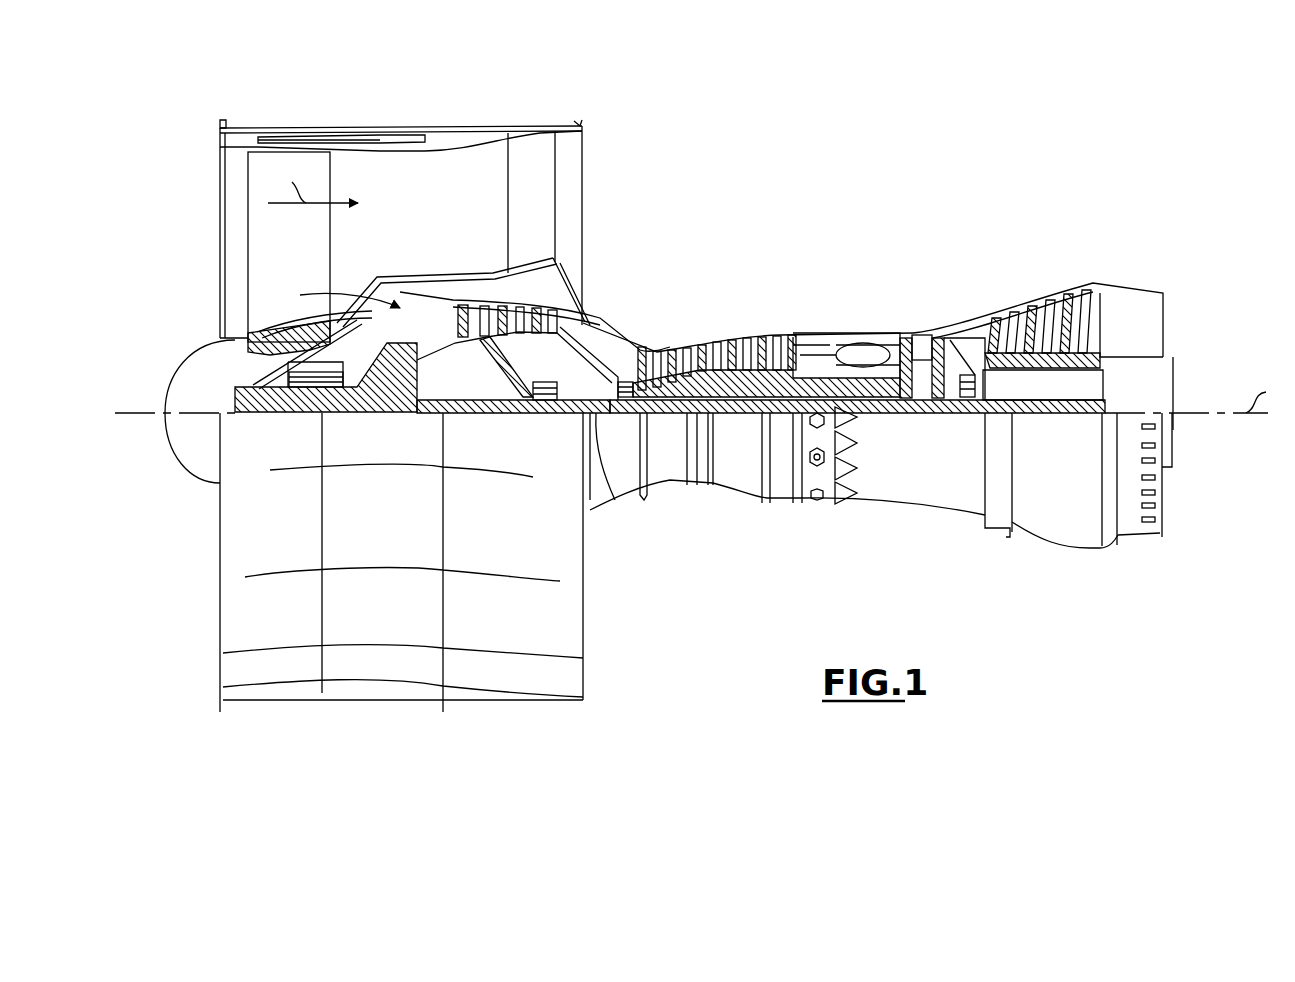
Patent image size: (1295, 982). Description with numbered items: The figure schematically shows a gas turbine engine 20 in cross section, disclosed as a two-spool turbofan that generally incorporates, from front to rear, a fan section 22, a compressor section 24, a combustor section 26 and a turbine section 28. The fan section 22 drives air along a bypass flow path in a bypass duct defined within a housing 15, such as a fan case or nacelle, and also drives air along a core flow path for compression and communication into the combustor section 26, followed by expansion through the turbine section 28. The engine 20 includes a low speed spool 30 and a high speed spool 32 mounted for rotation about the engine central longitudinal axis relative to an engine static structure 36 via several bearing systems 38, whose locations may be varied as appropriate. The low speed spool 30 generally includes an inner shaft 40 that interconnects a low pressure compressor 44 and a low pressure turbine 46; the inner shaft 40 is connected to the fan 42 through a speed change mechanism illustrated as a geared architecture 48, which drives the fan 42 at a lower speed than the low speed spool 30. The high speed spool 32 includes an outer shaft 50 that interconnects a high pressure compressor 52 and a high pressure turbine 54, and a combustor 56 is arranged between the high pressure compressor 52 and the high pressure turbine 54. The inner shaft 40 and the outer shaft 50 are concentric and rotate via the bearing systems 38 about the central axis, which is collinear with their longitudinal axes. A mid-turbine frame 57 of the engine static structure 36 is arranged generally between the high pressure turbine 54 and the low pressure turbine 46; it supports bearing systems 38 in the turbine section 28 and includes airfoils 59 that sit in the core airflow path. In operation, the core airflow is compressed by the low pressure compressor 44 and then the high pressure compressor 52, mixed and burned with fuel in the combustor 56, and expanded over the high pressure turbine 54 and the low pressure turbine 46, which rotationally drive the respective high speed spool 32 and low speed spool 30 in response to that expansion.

The housing 15 is at (403, 133).
The gas turbine engine 20 is at (862, 178).
The fan section 22 is at (332, 116).
The compressor section 24 is at (634, 320).
The combustor section 26 is at (855, 308).
The turbine section 28 is at (1000, 272).
The low speed spool 30 is at (740, 420).
The high speed spool 32 is at (784, 345).
The engine static structure 36 is at (780, 505).
The bearing systems 38 is at (542, 400).
The inner shaft 40 is at (603, 430).
The fan 42 is at (306, 256).
The low pressure compressor 44 is at (503, 318).
The low pressure turbine 46 is at (1050, 305).
The geared architecture 48 is at (397, 395).
The outer shaft 50 is at (868, 413).
The high pressure compressor 52 is at (700, 352).
The high pressure turbine 54 is at (926, 340).
The combustor 56 is at (860, 352).
The mid-turbine frame 57 is at (964, 320).
The airfoils 59 is at (985, 377).